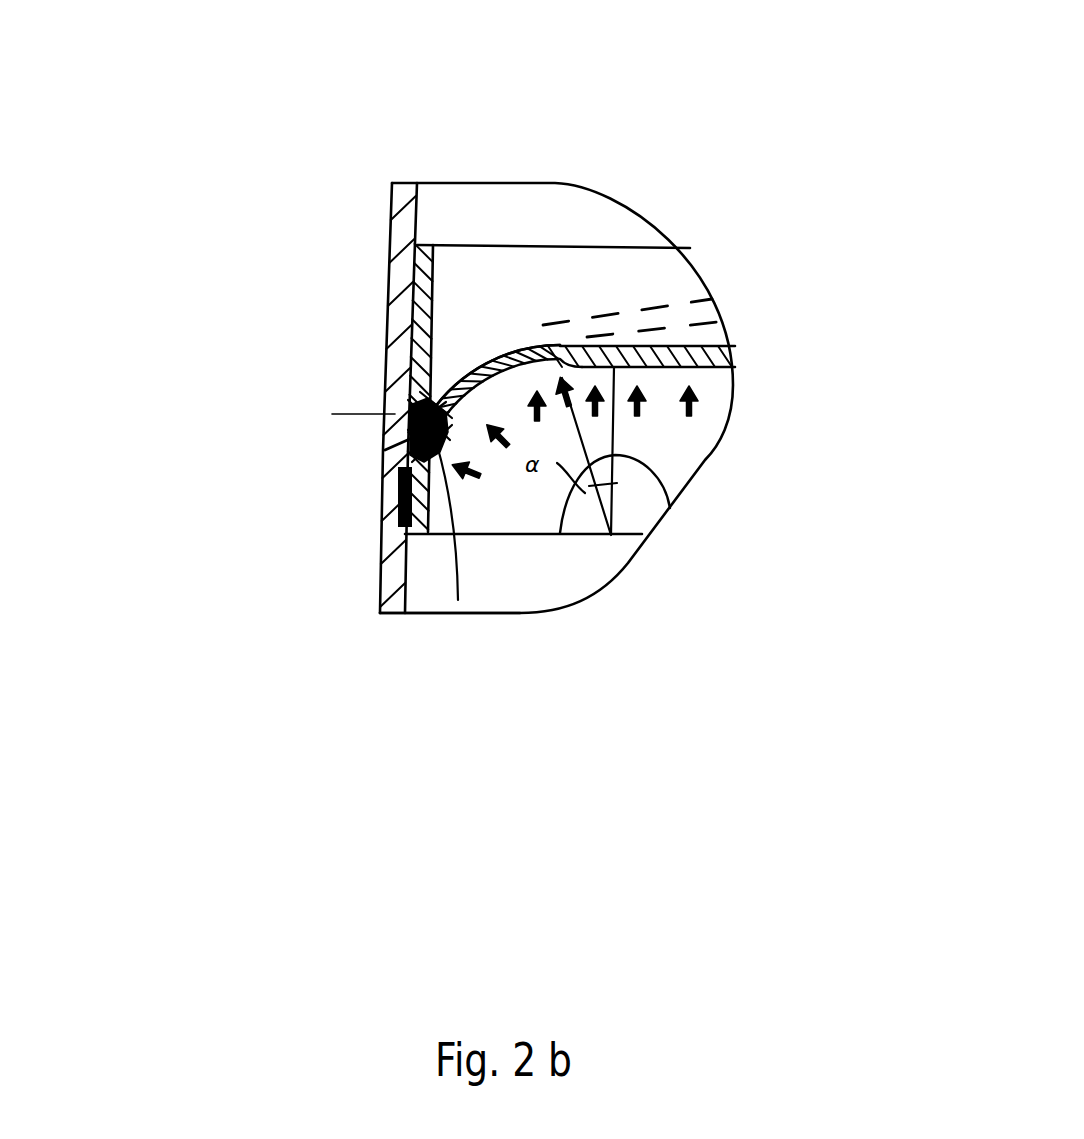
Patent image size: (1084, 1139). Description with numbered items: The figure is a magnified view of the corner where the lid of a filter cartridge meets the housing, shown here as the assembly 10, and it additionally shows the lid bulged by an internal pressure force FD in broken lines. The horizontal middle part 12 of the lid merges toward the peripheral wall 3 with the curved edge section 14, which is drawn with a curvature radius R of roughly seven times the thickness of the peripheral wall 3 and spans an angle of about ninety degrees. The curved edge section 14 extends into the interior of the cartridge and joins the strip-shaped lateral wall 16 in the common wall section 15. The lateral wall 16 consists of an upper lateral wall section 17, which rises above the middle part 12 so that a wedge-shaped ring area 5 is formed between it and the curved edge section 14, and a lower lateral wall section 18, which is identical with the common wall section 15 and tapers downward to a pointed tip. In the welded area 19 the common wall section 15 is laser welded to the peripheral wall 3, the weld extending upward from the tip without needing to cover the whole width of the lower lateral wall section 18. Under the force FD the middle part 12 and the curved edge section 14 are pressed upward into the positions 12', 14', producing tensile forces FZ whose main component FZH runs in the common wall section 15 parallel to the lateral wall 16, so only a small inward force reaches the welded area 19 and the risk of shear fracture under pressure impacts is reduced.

The peripheral wall 3 is at (377, 593).
The ring area 5 is at (469, 361).
The device 10 is at (656, 186).
The horizontal middle part 12 is at (757, 272).
The position of the middle part 12' is at (715, 233).
The curved edge section 14 is at (518, 219).
The position of the curved edge section 14' is at (495, 229).
The common wall section 15 is at (385, 486).
The lateral wall 16 is at (392, 372).
The upper lateral wall section 17 is at (390, 315).
The lower lateral wall section 18 is at (430, 427).
The welded area 19 is at (377, 517).
The curvature radius R is at (670, 508).
The force acting on the inside FD is at (695, 405).
The main component of the tensile forces FZH is at (385, 450).
The tensile forces FZ is at (458, 600).